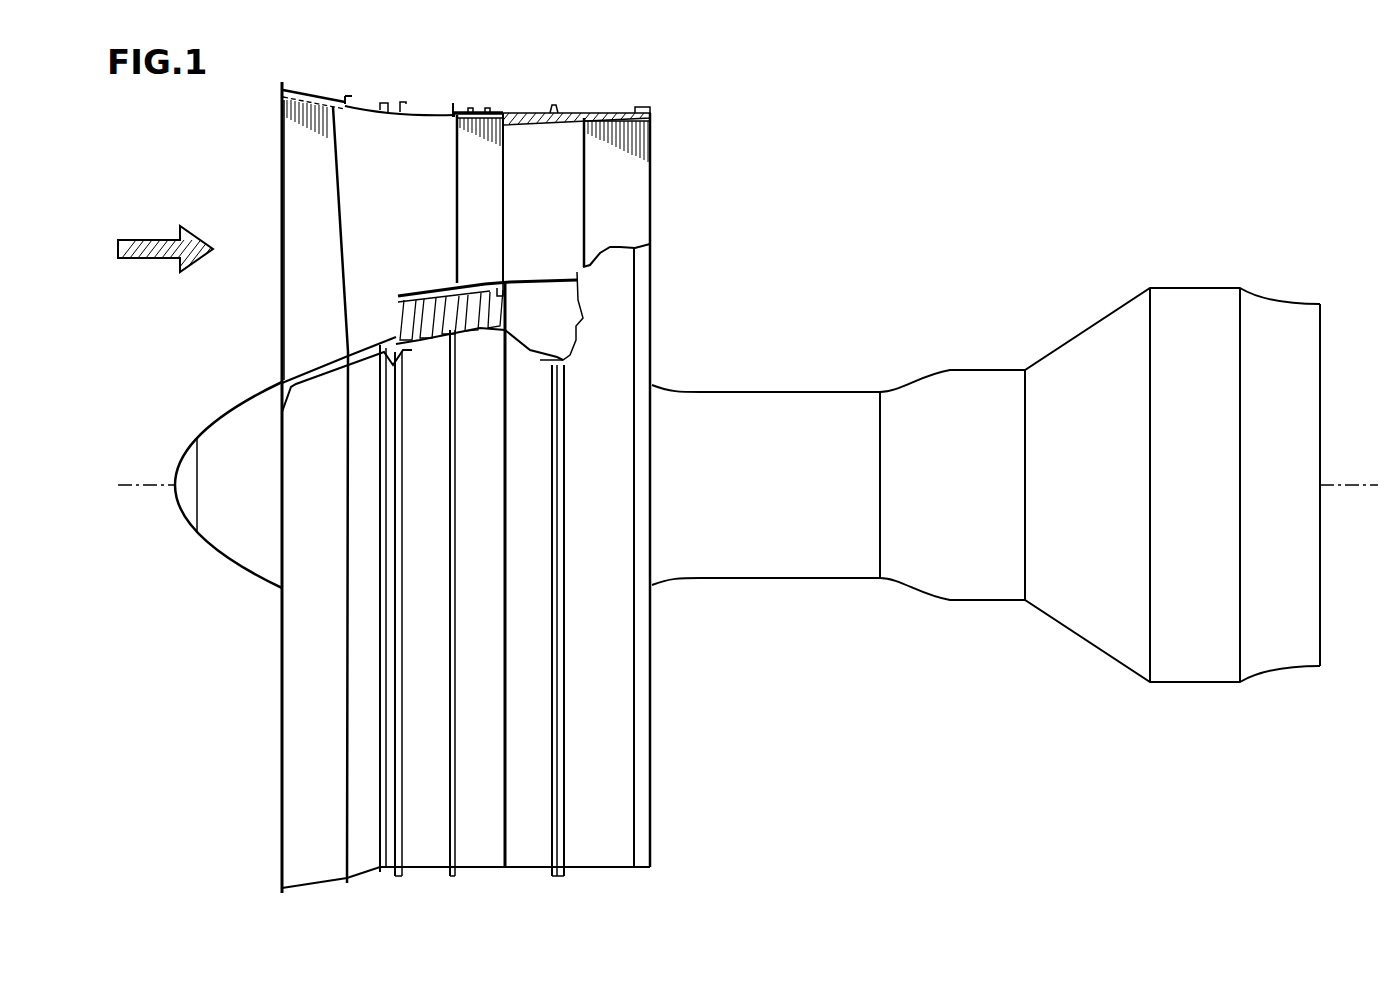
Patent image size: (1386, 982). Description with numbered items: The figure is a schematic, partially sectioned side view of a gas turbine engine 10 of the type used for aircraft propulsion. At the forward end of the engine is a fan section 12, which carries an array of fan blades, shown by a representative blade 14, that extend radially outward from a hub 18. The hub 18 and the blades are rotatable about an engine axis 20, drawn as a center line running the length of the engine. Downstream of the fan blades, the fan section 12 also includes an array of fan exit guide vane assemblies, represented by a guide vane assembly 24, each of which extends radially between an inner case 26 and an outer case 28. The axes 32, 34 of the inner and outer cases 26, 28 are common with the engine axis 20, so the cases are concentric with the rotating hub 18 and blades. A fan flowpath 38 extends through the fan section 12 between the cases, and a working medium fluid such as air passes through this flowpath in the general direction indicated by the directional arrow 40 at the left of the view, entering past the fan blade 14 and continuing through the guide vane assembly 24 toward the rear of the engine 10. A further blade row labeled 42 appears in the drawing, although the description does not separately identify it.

The gas turbine engine 10 is at (848, 158).
The fan section 12 is at (254, 152).
The fan blade 14 is at (322, 211).
The hub 18 is at (342, 356).
The engine axis 20 is at (741, 485).
The axis of inner case 32 is at (741, 485).
The axis of outer case 34 is at (124, 482).
The guide vane assembly 24 is at (492, 211).
The inner case 26 is at (473, 284).
The outer case 28 is at (483, 112).
The fan flowpath 38 is at (408, 211).
The directional arrow 40 is at (170, 238).
The compressor blade 42 is at (629, 211).